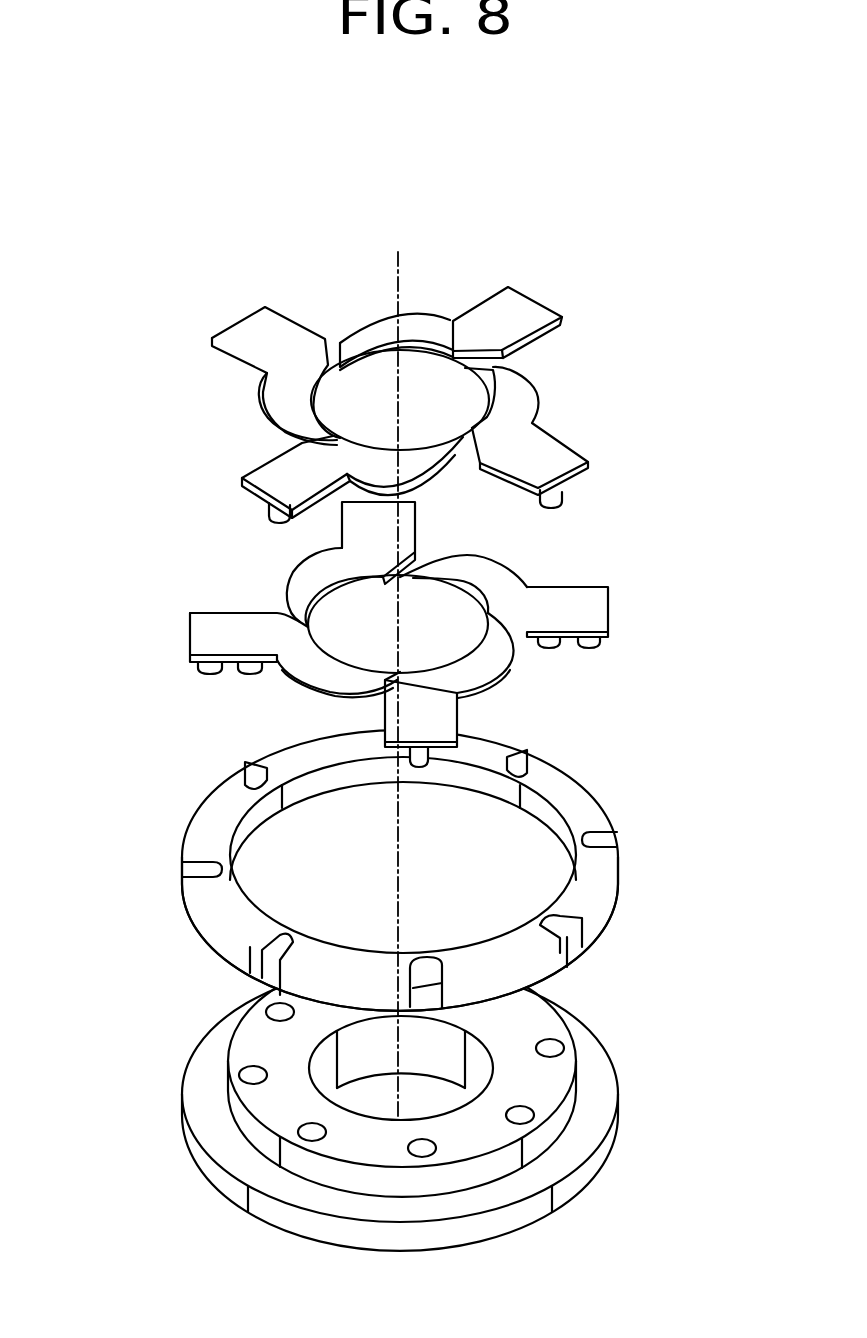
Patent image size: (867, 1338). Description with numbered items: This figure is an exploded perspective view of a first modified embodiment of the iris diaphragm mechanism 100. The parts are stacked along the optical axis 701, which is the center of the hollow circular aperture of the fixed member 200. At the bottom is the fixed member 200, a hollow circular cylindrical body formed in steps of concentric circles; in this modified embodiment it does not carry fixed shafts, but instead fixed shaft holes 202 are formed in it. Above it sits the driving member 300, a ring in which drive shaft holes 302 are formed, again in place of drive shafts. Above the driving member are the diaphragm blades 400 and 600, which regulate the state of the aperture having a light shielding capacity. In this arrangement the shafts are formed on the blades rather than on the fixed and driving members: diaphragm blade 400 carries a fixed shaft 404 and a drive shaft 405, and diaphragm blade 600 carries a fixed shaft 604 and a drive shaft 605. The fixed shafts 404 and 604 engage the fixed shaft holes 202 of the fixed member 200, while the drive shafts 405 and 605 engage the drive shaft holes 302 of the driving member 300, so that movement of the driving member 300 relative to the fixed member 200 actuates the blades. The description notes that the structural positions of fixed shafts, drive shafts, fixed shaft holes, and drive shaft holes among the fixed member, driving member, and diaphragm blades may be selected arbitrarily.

The iris diaphragm mechanism 100 is at (200, 1202).
The fixed member 200 is at (463, 1103).
The fixed shaft holes 202 is at (558, 1047).
The driving member 300 is at (463, 870).
The drive shaft holes 302 is at (602, 943).
The diaphragm blade 400 is at (468, 634).
The fixed shaft 404 is at (543, 643).
The drive shaft 405 is at (598, 645).
The diaphragm blade 600 is at (458, 429).
The fixed shaft 604 is at (508, 480).
The drive shaft 605 is at (558, 489).
The optical axis 701 is at (393, 263).